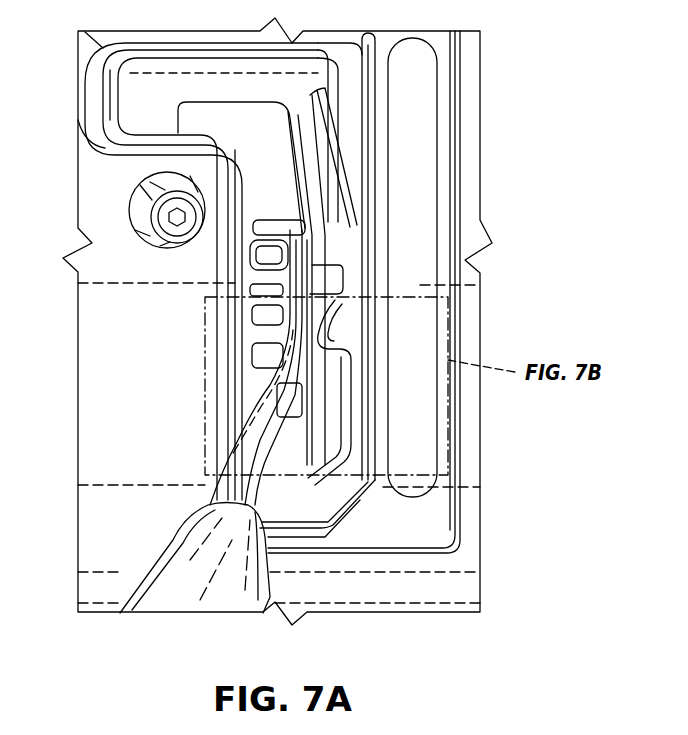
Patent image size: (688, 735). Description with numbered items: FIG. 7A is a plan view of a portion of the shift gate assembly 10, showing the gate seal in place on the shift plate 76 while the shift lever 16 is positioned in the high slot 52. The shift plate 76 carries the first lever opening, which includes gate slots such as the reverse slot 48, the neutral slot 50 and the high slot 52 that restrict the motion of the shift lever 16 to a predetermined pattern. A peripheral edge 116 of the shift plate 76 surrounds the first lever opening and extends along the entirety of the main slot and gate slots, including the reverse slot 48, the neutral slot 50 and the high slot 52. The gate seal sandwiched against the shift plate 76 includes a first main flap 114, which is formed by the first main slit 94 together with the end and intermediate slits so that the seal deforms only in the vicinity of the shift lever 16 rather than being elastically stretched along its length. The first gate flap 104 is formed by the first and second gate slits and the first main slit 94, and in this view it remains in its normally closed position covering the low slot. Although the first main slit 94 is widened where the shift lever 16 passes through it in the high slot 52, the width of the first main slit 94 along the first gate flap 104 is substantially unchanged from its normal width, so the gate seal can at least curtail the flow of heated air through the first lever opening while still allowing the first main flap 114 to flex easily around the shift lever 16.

The shift gate assembly 10 is at (504, 64).
The peripheral edge 116 is at (327, 137).
The first main flap 114 is at (330, 444).
The reverse slot 48 is at (275, 215).
The first main slit 94 is at (290, 273).
The neutral slot 50 is at (255, 318).
The high slot 52 is at (260, 353).
The first gate flap 104 is at (277, 467).
The shift plate 76 is at (140, 455).
The shift lever 16 is at (195, 575).